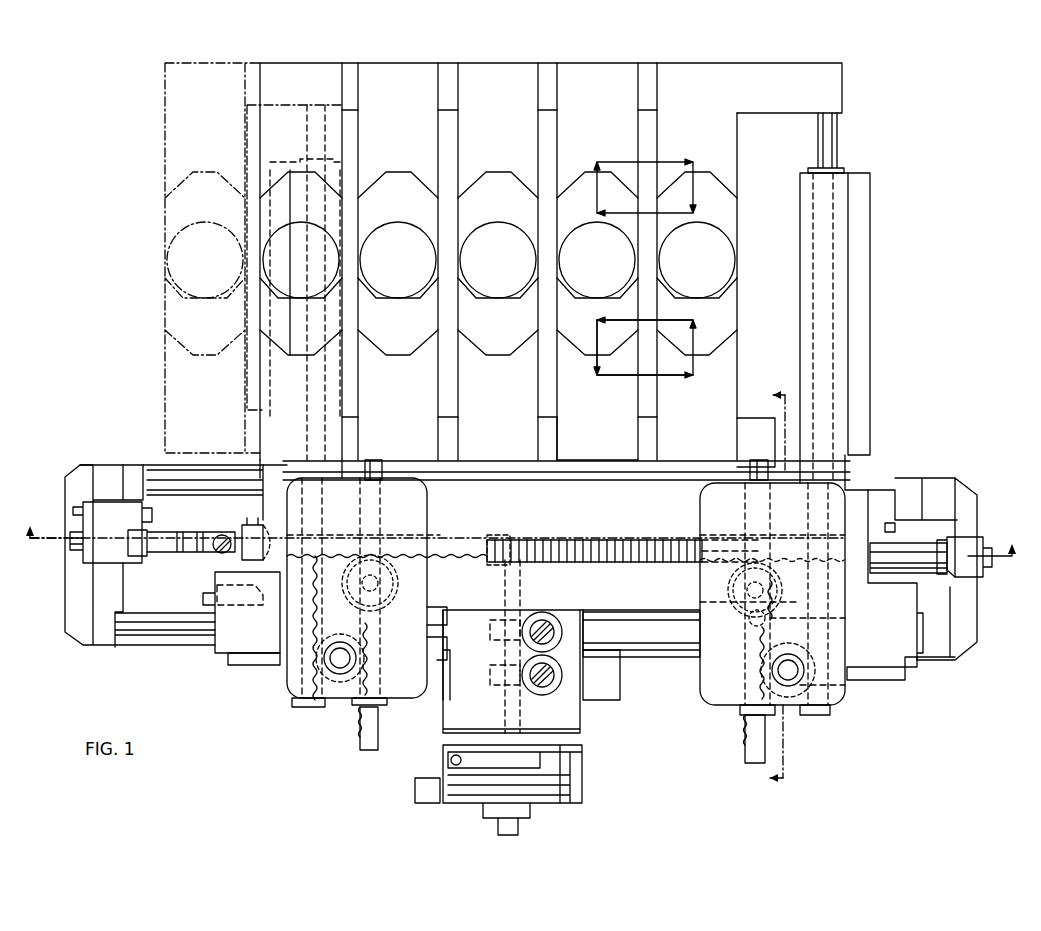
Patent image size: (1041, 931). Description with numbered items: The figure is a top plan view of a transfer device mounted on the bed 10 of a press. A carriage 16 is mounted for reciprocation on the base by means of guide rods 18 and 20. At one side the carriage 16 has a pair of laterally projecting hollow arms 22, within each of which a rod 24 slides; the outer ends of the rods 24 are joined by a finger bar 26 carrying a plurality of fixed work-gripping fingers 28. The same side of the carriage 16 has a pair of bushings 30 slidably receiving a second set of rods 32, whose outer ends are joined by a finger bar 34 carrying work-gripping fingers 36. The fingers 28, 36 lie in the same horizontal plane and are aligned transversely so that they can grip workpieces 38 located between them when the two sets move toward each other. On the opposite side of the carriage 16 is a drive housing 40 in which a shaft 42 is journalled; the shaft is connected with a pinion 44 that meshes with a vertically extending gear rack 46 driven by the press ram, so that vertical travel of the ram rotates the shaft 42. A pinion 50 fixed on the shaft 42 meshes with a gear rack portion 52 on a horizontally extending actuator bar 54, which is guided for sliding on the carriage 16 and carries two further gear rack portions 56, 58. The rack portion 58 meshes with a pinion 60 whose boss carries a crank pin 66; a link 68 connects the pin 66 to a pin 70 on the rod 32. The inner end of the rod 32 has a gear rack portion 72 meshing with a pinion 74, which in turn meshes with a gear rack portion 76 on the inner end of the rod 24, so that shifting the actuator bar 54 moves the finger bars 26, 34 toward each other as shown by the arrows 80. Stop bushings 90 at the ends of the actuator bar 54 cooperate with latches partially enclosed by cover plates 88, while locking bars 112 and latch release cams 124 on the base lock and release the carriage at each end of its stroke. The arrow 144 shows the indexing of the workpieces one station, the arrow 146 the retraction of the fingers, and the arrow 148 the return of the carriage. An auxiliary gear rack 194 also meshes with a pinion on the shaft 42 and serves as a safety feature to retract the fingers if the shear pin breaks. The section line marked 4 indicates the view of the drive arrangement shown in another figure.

The bed 10 is at (520, 531).
The carriage 16 is at (622, 520).
The guide rod 18 is at (157, 632).
The guide rod 20 is at (205, 500).
The hollow arm 22 is at (845, 365).
The rod 24 is at (837, 152).
The finger bar 26 is at (842, 97).
The work-gripping finger 28 is at (728, 157).
The bushing 30 is at (383, 480).
The rod 32 is at (380, 462).
The finger bar 34 is at (540, 420).
The work-gripping finger 36 is at (737, 357).
The workpiece 38 is at (730, 254).
The drive housing 40 is at (565, 723).
The shaft 42 is at (522, 600).
The pinion 44 is at (490, 690).
The gear rack 46 is at (565, 677).
The pinion 50 is at (540, 540).
The gear rack portion 52 is at (610, 562).
The actuator bar 54 is at (631, 612).
The gear rack portion 56 is at (472, 560).
The gear rack portion 58 is at (766, 568).
The pinion 60 is at (740, 580).
The crank pin 66 is at (752, 624).
The link 68 is at (740, 602).
The pin 70 is at (765, 545).
The gear rack portion 72 is at (770, 732).
The pinion 74 is at (830, 693).
The gear rack portion 76 is at (845, 627).
The arrows 80 is at (700, 208).
The cover plate 88 is at (247, 665).
The stop bushing 90 is at (246, 530).
The locking bar 112 is at (165, 548).
The latch release cam 124 is at (205, 592).
The arrow 144 is at (680, 315).
The arrow 146 is at (600, 372).
The arrow 148 is at (620, 378).
The auxiliary gear rack 194 is at (563, 630).
The section line 4- 4 is at (771, 591).